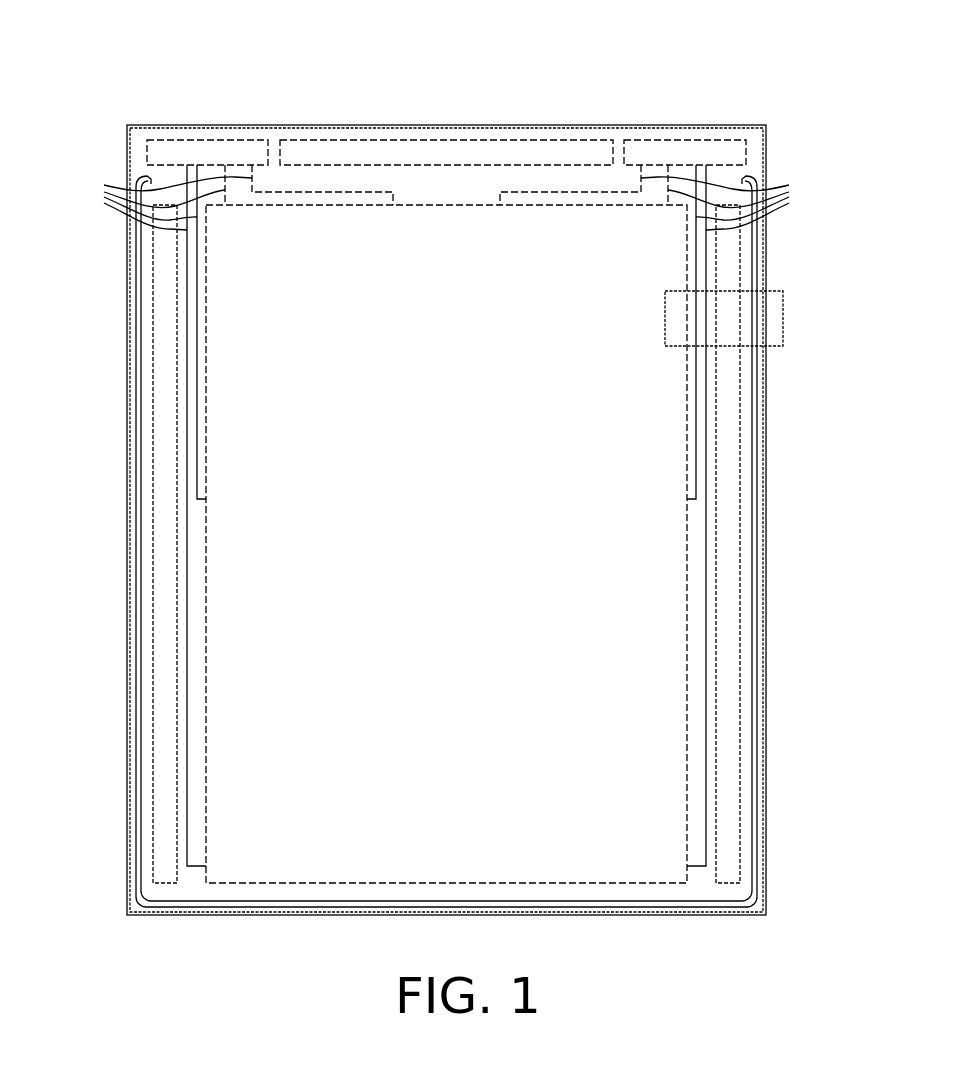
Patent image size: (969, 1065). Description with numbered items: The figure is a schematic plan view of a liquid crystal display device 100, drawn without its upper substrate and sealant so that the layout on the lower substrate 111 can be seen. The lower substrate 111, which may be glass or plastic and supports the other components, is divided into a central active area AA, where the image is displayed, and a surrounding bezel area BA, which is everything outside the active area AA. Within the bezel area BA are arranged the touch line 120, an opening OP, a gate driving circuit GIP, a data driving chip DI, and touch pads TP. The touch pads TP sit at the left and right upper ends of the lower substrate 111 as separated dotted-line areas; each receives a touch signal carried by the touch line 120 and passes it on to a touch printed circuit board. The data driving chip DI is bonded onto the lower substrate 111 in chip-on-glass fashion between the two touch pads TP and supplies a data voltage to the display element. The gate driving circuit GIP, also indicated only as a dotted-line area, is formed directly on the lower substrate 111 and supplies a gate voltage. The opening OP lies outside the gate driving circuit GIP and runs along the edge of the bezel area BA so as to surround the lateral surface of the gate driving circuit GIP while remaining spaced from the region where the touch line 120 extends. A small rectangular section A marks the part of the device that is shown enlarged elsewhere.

The liquid crystal display device 100 is at (828, 30).
The lower substrate 111 is at (485, 106).
The touch line 120 is at (446, 197).
The touch pad TP is at (228, 150).
The data driving chip DI is at (462, 150).
The section A is at (784, 303).
The opening OP is at (755, 405).
The gate driving circuit GIP is at (165, 485).
The bezel area BA is at (695, 550).
The active area AA is at (446, 544).